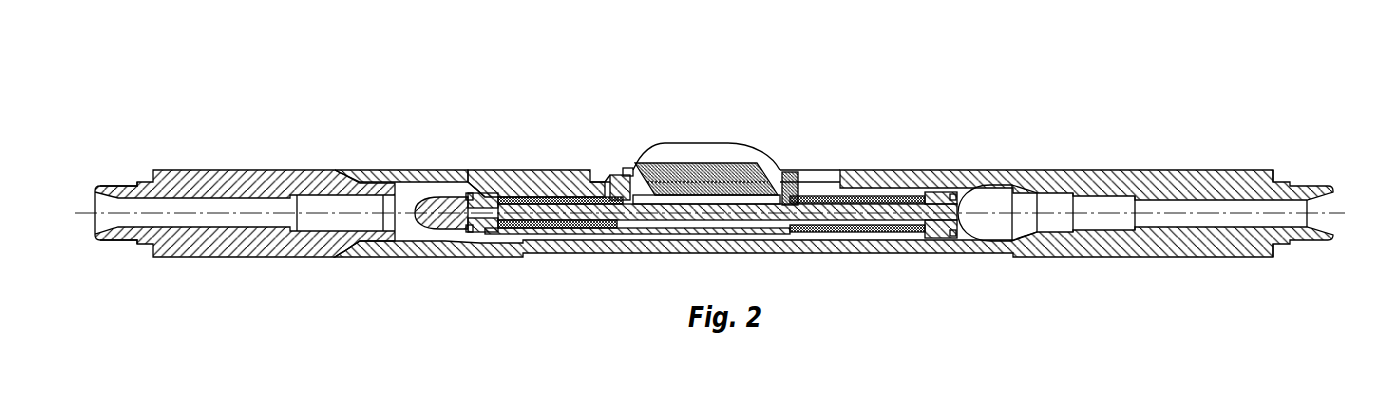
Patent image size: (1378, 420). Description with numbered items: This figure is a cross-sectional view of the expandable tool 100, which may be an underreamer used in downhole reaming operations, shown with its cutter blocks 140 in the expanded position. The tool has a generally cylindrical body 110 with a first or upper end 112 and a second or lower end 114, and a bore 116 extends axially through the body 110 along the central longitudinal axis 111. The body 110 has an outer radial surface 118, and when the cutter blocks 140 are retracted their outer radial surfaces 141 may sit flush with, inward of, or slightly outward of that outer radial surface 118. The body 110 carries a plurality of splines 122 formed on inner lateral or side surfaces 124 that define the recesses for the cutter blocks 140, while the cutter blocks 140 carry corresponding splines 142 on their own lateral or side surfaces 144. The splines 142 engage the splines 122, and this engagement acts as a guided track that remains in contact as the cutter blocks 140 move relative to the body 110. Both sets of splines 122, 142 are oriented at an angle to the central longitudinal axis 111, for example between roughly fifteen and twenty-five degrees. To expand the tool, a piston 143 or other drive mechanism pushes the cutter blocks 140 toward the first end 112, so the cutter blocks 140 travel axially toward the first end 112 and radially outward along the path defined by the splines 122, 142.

The expandable tool 100 is at (321, 71).
The body 110 is at (480, 182).
The central longitudinal axis 111 is at (80, 215).
The first end 112 is at (118, 186).
The second end 114 is at (1307, 188).
The bore 116 is at (213, 218).
The outer radial surface 118 is at (545, 173).
The splines 122 is at (745, 190).
The inner side surfaces 124 is at (652, 187).
The cutter blocks 140 is at (698, 150).
The outer radial surfaces 141 is at (688, 140).
The splines 142 is at (752, 172).
The piston 143 is at (783, 182).
The side surfaces 144 is at (650, 155).